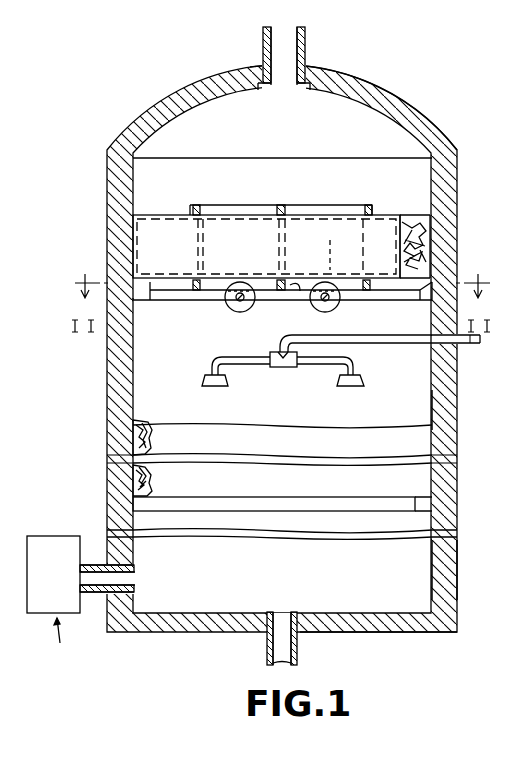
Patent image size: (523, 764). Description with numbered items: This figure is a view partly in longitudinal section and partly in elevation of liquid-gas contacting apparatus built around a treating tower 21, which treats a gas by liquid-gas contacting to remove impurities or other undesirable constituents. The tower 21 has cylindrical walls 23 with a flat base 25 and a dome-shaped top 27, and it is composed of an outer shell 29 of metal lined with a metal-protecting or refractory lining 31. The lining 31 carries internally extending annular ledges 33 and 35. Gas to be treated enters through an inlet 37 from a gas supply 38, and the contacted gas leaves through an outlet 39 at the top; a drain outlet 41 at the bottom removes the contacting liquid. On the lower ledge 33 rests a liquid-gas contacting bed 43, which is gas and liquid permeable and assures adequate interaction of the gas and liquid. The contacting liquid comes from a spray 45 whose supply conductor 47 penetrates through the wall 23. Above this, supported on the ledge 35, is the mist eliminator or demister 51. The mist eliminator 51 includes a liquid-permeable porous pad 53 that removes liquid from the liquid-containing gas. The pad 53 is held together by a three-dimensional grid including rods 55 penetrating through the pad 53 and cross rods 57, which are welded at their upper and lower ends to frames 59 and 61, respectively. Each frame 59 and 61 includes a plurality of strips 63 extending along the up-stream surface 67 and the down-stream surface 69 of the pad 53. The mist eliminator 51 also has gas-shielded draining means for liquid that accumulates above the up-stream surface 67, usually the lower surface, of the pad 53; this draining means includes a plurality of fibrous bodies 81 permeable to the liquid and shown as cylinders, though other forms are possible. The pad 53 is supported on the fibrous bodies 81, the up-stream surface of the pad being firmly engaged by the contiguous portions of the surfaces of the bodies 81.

The treating tower 21 is at (168, 81).
The cylindrical walls 23 is at (486, 416).
The flat base 25 is at (362, 632).
The dome-shaped top 27 is at (400, 81).
The outer shell 29 is at (455, 572).
The lining 31 is at (438, 572).
The annular ledge 33 is at (150, 498).
The annular ledge 35 is at (405, 298).
The inlet 37 is at (120, 578).
The gas supply 38 is at (82, 536).
The outlet 39 is at (264, 52).
The drain outlet 41 is at (268, 658).
The liquid-gas contacting bed 43 is at (146, 425).
The spray 45 is at (290, 387).
The supply conductor 47 is at (476, 344).
The mist eliminator 51 is at (243, 249).
The porous pad 53 is at (414, 212).
The rods 55 is at (361, 251).
The cross rods 57 is at (320, 276).
The frame 59 is at (326, 199).
The frame 61 is at (348, 290).
The strips 63 is at (374, 207).
The up-stream surface 67 is at (208, 290).
The down-stream surface 69 is at (258, 207).
The fibrous bodies 81 is at (257, 304).